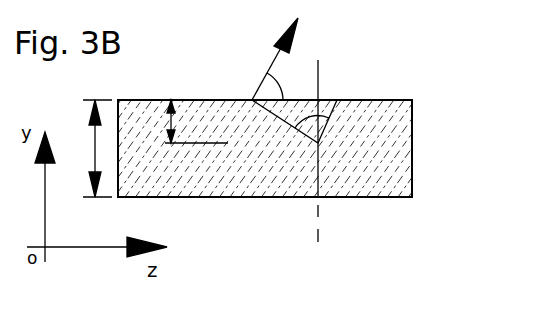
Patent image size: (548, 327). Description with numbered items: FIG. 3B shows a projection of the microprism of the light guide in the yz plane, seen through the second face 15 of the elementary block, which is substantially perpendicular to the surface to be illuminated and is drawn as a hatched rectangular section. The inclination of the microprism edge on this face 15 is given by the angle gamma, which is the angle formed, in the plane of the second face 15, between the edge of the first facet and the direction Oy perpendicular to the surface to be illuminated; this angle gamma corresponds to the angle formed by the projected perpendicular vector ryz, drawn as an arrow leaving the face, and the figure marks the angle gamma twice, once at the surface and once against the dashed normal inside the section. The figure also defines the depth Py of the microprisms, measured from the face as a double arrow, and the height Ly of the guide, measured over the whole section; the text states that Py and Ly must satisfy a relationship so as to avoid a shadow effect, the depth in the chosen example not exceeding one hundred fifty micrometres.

The second face 15 is at (382, 113).
The height Ly is at (85, 148).
The depth of the microprisms Py is at (173, 116).
The projection of perpendicular vector r ryz is at (321, 4).
The angle gamma is at (265, 88).